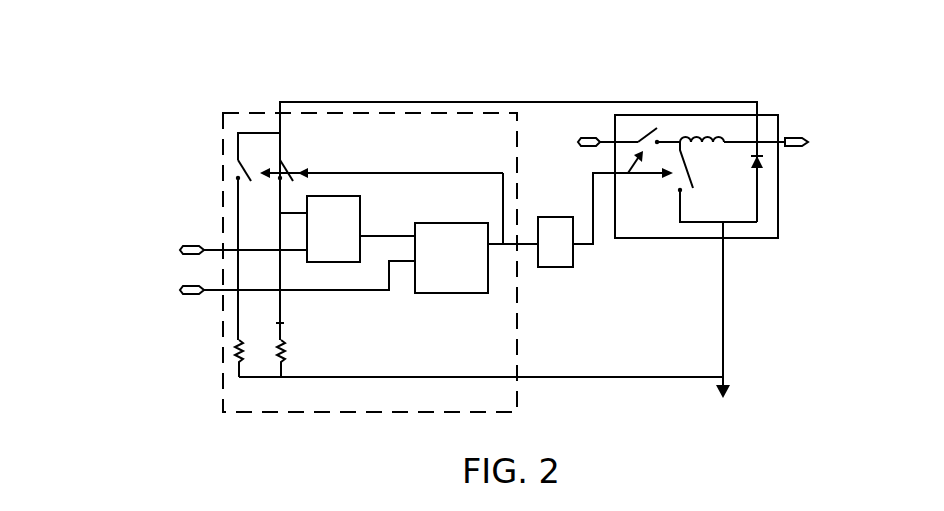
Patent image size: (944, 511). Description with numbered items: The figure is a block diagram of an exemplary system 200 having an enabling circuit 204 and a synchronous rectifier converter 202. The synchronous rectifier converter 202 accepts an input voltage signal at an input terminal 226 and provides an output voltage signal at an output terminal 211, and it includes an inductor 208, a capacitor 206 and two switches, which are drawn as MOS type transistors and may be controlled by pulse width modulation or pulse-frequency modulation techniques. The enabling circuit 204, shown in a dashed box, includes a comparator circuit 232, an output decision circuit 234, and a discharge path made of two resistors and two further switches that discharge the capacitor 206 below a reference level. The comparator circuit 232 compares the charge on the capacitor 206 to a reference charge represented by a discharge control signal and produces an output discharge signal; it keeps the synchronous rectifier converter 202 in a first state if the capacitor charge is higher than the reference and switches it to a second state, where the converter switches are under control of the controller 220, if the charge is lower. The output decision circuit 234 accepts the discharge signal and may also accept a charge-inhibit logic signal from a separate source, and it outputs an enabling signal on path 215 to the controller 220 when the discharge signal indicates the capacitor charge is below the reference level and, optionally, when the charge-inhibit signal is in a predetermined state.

The system 200 is at (108, 138).
The synchronous rectifier converter 202 is at (774, 115).
The enabling circuit 204 is at (228, 110).
The capacitor 206 is at (768, 168).
The inductor 208 is at (704, 140).
The output terminal 211 is at (806, 138).
The path 215 is at (536, 242).
The controller 220 is at (556, 268).
The input terminal 226 is at (590, 138).
The comparator circuit 232 is at (337, 196).
The output decision circuit 234 is at (436, 223).